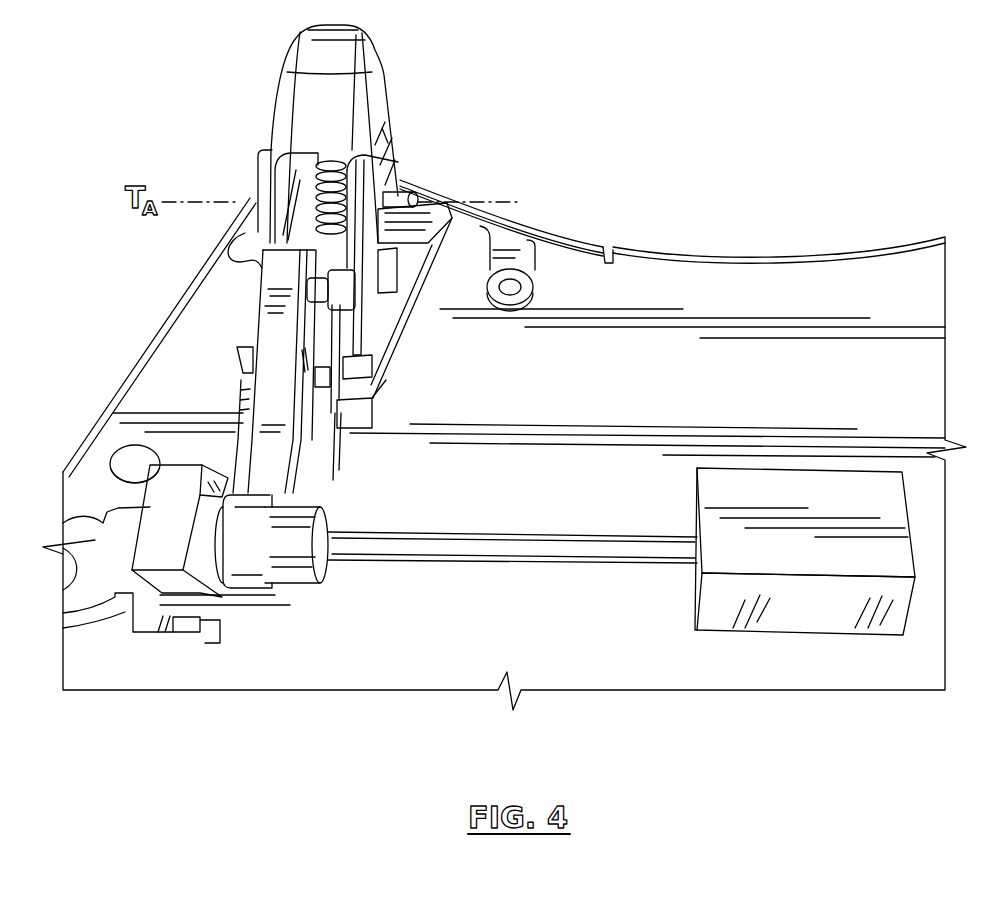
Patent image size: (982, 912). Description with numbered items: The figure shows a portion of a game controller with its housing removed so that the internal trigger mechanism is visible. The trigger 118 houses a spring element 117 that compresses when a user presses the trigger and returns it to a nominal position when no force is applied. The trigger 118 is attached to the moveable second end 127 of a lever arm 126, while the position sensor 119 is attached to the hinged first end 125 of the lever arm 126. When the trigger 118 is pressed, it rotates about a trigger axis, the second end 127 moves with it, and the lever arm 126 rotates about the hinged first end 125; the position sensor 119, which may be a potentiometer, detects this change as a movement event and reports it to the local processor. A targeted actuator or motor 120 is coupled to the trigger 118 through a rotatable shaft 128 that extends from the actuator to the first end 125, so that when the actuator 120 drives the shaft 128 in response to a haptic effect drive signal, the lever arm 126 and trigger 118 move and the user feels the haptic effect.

The trigger 118 is at (392, 78).
The spring element 117 is at (345, 158).
The moveable second end 127 is at (253, 257).
The lever arm 126 is at (272, 355).
The hinged first end 125 is at (248, 572).
The rotatable shaft 128 is at (385, 568).
The targeted actuator or motor 120 is at (762, 492).
The position sensor 119 is at (215, 545).